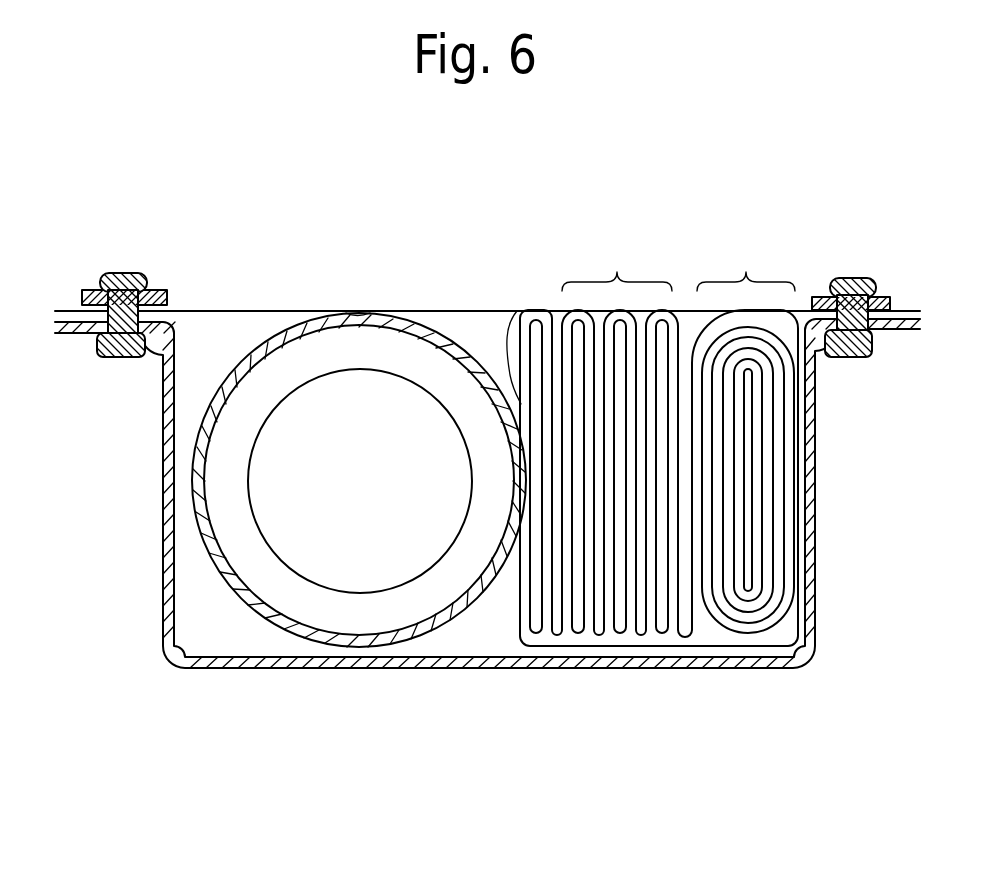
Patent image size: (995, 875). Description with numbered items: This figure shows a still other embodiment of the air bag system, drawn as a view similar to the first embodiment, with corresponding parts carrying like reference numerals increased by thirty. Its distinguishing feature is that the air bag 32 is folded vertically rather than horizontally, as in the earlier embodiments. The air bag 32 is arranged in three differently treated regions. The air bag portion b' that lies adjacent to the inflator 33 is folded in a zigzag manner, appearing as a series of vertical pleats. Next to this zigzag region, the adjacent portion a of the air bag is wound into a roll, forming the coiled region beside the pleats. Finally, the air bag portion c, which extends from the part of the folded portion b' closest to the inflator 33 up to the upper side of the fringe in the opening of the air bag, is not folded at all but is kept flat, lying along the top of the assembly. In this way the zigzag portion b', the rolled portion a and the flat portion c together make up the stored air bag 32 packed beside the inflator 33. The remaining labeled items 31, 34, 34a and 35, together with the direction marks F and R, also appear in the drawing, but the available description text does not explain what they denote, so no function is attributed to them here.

The cylindrical member 31 is at (360, 481).
The air bag 32 is at (525, 596).
The inflator 33 is at (813, 578).
The holder 34 is at (431, 330).
The projection 34a is at (357, 313).
The cushion ring 35 is at (278, 587).
The air bag portion c is at (262, 311).
The air bag portion b' is at (617, 254).
The portion a is at (746, 257).
The front F is at (80, 498).
The rear R is at (882, 491).